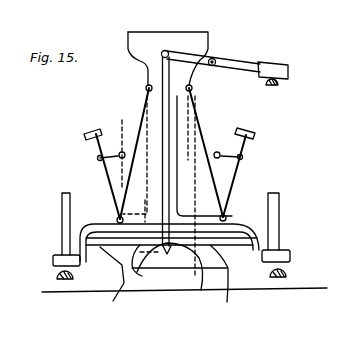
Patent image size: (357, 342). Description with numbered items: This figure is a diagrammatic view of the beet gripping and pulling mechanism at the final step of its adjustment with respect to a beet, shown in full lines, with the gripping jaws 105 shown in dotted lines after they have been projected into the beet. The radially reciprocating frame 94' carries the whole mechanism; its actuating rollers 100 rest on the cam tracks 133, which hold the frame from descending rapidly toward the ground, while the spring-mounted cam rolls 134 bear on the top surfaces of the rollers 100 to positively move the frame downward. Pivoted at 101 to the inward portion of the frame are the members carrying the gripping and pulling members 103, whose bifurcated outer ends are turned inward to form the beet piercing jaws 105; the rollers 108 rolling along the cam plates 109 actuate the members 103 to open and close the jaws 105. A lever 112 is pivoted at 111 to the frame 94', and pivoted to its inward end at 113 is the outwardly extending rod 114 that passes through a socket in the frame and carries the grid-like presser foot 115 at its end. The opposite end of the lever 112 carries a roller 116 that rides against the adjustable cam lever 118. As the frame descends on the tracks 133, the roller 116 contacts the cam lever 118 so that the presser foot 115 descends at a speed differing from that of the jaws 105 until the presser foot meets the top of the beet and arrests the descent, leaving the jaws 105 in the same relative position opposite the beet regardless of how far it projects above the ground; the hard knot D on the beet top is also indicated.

The pivot 101 is at (151, 84).
The pivot 113 is at (167, 51).
The outwardly extending rod 114 is at (170, 167).
The lever 112 is at (248, 60).
The pivot 111 is at (214, 59).
The roller 116 is at (278, 64).
The cam lever 118 is at (280, 85).
The cam plates 109 is at (128, 116).
The gripping and pulling members 103 is at (116, 188).
The rollers 108 is at (86, 133).
The frame 94' is at (204, 156).
The actuating rollers 100 is at (53, 258).
The cam rolls 134 is at (62, 197).
The cam tracks 133 is at (65, 284).
The beet piercing jaws 105 is at (178, 281).
The presser foot 115 is at (138, 272).